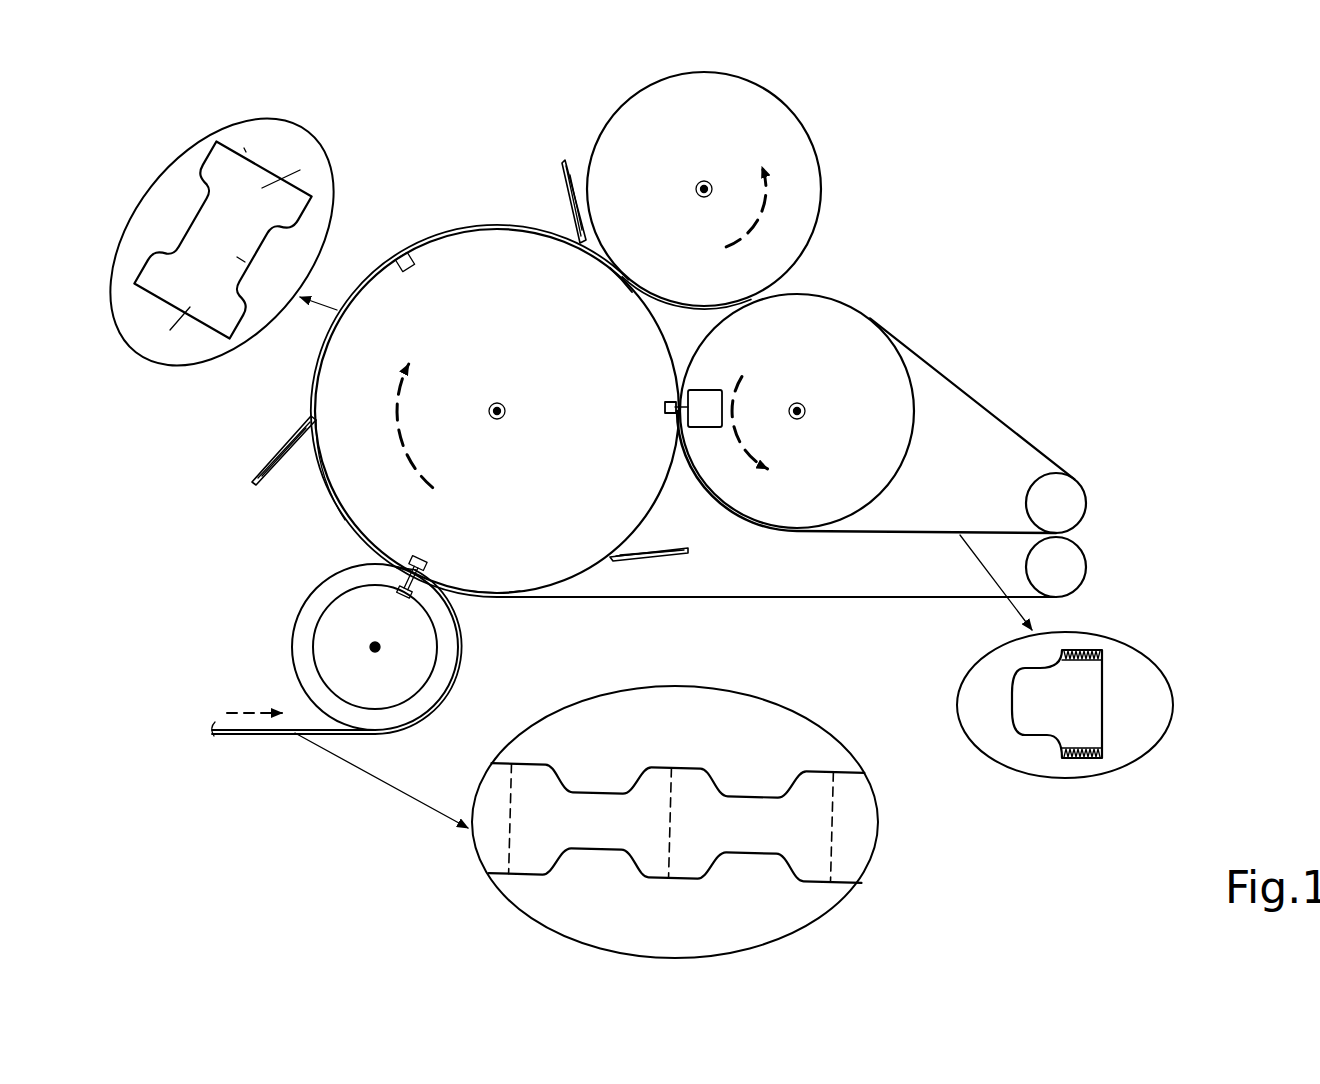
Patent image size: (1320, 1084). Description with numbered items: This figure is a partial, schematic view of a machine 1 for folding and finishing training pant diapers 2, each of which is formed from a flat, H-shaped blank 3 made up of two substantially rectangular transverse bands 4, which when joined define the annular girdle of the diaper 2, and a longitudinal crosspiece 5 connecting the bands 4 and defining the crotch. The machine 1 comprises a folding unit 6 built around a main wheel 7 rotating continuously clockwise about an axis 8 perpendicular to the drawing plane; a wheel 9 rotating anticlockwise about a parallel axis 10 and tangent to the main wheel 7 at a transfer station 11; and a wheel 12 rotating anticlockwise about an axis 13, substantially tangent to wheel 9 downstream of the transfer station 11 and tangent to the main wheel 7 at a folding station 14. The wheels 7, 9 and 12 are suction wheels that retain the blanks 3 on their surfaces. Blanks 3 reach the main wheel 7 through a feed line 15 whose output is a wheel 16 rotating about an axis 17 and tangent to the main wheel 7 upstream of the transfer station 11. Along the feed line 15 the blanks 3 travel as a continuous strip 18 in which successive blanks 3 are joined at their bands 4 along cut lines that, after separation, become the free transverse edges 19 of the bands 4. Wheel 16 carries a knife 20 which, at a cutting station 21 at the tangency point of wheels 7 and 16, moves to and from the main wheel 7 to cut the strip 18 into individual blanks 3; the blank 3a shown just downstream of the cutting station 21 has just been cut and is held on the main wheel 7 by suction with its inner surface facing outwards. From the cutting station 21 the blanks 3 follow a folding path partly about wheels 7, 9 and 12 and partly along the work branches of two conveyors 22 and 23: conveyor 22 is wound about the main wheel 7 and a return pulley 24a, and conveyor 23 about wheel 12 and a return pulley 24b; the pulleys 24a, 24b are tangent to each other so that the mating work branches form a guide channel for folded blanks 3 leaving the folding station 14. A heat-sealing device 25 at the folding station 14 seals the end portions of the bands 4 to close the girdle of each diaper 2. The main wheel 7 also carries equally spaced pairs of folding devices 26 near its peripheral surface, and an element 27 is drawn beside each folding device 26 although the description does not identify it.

The machine 1 is at (644, 500).
The training pant diaper 2 is at (1043, 745).
The blank 3 is at (494, 227).
The blank just cut off strip 3a is at (332, 488).
The transverse band 4 is at (262, 188).
The longitudinal crosspiece 5 is at (237, 257).
The folding unit 6 is at (806, 275).
The main wheel 7 is at (543, 570).
The axis 8 is at (507, 411).
The wheel 9 is at (633, 112).
The axis 10 is at (712, 183).
The transfer station 11 is at (621, 286).
The wheel 12 is at (847, 327).
The axis 13 is at (805, 415).
The folding station 14 is at (674, 422).
The feed line 15 is at (297, 690).
The wheel 16 is at (315, 601).
The axis 17 is at (382, 650).
The continuous strip 18 is at (248, 736).
The free transverse edge 19 is at (245, 150).
The knife 20 is at (412, 590).
The cutting station 21 is at (388, 563).
The conveyor 22 is at (742, 598).
The conveyor 23 is at (960, 385).
The return pulley 24a is at (1078, 573).
The return pulley 24b is at (1078, 500).
The heat-sealing device 25 is at (708, 390).
The folding device 26 is at (557, 155).
The blade edge 27 is at (572, 198).